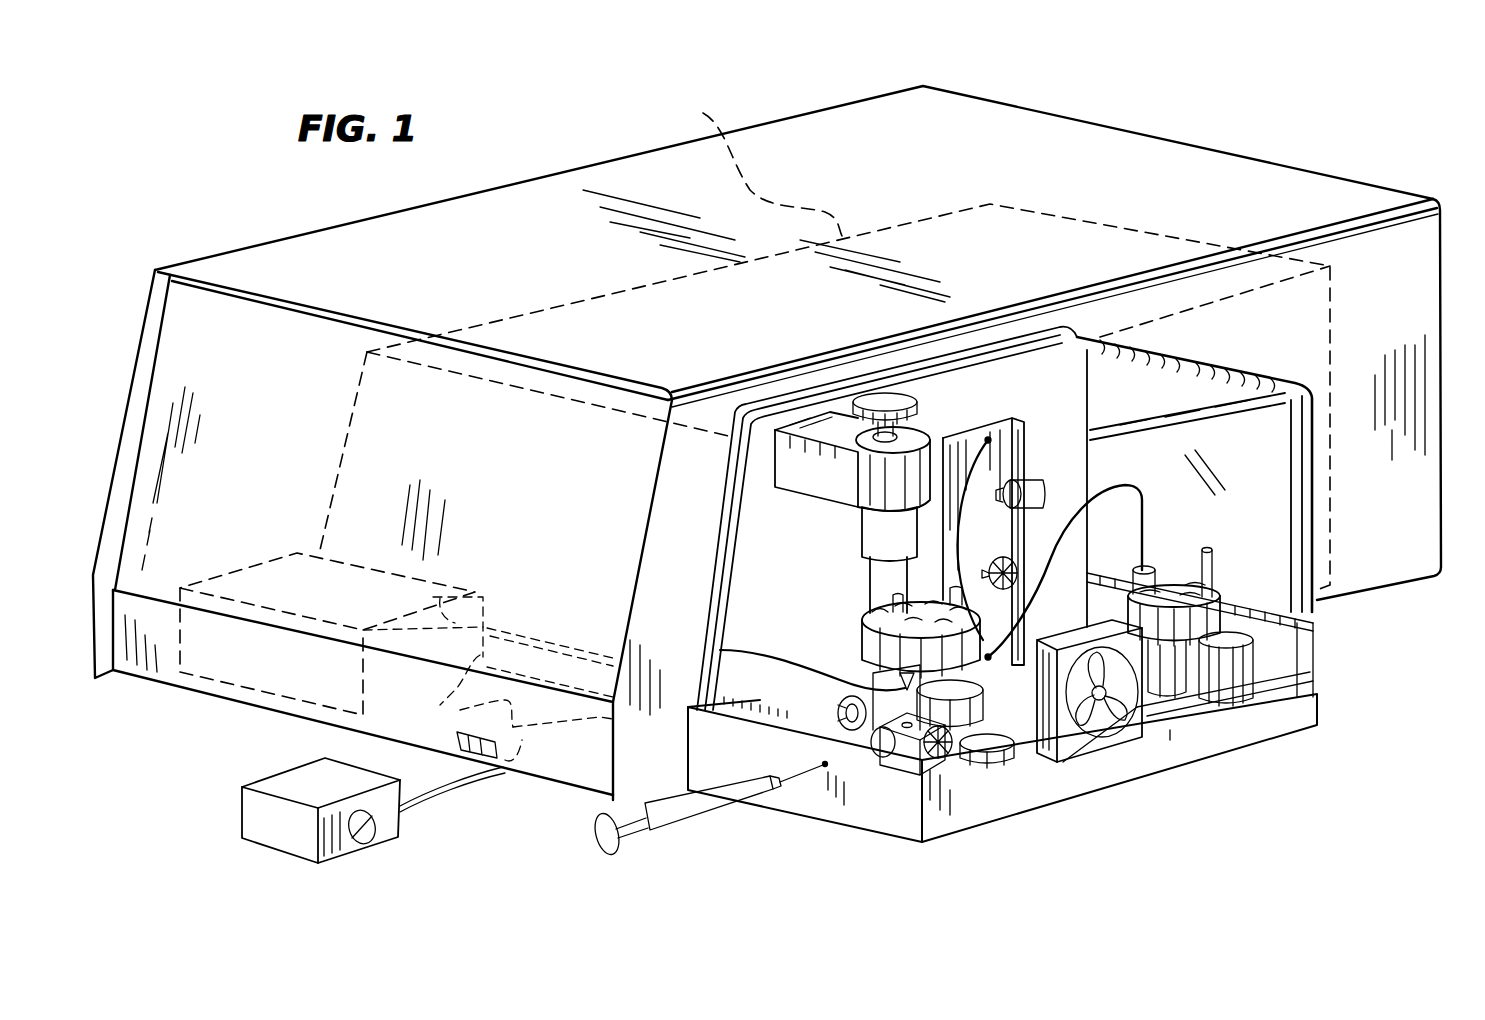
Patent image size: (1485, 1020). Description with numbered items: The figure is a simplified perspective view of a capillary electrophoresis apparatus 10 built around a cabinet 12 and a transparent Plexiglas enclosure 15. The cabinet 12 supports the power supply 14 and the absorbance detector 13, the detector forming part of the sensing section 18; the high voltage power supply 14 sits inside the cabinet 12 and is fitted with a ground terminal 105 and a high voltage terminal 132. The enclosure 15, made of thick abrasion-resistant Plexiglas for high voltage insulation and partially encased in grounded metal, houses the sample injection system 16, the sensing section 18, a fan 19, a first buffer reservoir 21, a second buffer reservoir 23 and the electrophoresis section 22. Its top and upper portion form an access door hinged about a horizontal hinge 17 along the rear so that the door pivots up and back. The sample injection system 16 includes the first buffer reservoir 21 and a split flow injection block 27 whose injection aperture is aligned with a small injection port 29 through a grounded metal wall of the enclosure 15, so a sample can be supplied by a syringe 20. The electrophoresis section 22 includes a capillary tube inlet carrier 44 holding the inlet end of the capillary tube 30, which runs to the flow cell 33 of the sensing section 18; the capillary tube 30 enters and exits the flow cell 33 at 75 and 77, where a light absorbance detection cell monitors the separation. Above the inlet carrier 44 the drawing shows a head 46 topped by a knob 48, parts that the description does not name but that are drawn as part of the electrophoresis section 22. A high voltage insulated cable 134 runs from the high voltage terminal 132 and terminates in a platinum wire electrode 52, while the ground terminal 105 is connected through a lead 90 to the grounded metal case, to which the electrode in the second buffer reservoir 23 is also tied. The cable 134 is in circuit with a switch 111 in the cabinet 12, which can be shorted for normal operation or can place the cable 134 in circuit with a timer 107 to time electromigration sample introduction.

The capillary electrophoresis apparatus 10 is at (882, 68).
The cabinet 12 is at (550, 198).
The absorbance detector 13 is at (685, 114).
The power supply 14 is at (255, 568).
The enclosure 15 is at (1165, 392).
The sample injection system 16 is at (846, 568).
The horizontal hinge 17 is at (1258, 610).
The sensing section 18 is at (997, 530).
The fan 19 is at (1073, 744).
The syringe 20 is at (725, 812).
The first buffer reservoir 21 is at (980, 706).
The electrophoresis section 22 is at (1158, 547).
The second buffer reservoir 23 is at (1180, 688).
The split flow injection block 27 is at (904, 754).
The injection port 29 is at (822, 763).
The capillary tube 30 is at (1145, 492).
The flow cell 33 is at (982, 492).
The capillary tube inlet carrier 44 is at (866, 640).
The drive head 46 is at (846, 516).
The adjustment knob 48 is at (882, 401).
The platinum wire electrode 52 is at (898, 672).
The capillary tube entry point 75 is at (990, 438).
The capillary tube exit point 77 is at (1036, 655).
The lead 90 is at (578, 645).
The ground terminal 105 is at (456, 600).
The timer 107 is at (245, 828).
The switch 111 is at (512, 766).
The high voltage terminal 132 is at (500, 664).
The high voltage insulated cable 134 is at (458, 710).